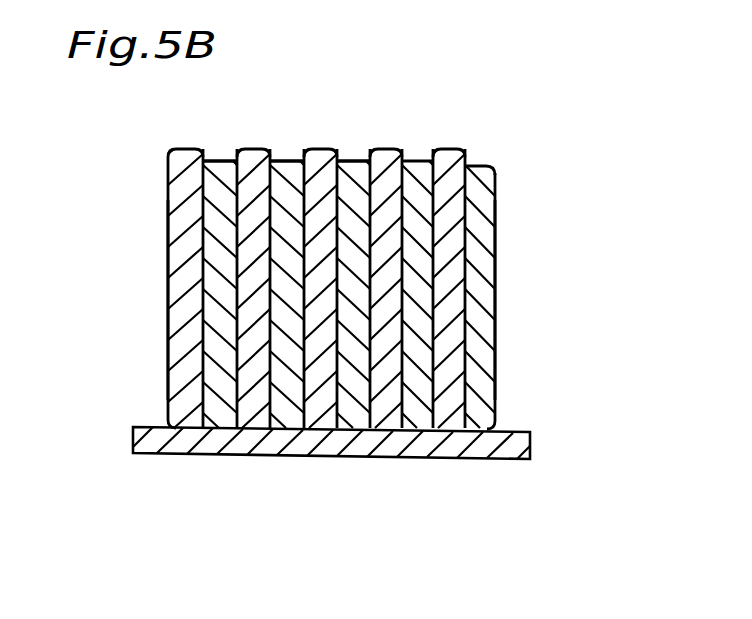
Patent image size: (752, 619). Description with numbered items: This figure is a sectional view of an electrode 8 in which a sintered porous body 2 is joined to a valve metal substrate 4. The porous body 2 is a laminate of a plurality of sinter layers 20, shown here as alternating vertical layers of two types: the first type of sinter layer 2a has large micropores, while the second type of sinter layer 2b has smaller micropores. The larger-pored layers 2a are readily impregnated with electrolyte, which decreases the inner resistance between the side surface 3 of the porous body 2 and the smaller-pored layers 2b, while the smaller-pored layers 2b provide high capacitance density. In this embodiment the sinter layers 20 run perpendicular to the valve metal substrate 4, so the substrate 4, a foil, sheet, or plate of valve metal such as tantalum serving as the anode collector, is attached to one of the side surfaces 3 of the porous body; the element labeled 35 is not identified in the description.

The porous body 2 is at (345, 298).
The first type of sinter layer 2a is at (455, 155).
The second type of sinter layer 2b is at (418, 240).
The side surface 3 is at (347, 148).
The sinter layers 20 is at (287, 158).
The side surface of fin body 35 is at (158, 325).
The valve metal substrate 4 is at (503, 442).
The electrode 8 is at (328, 594).